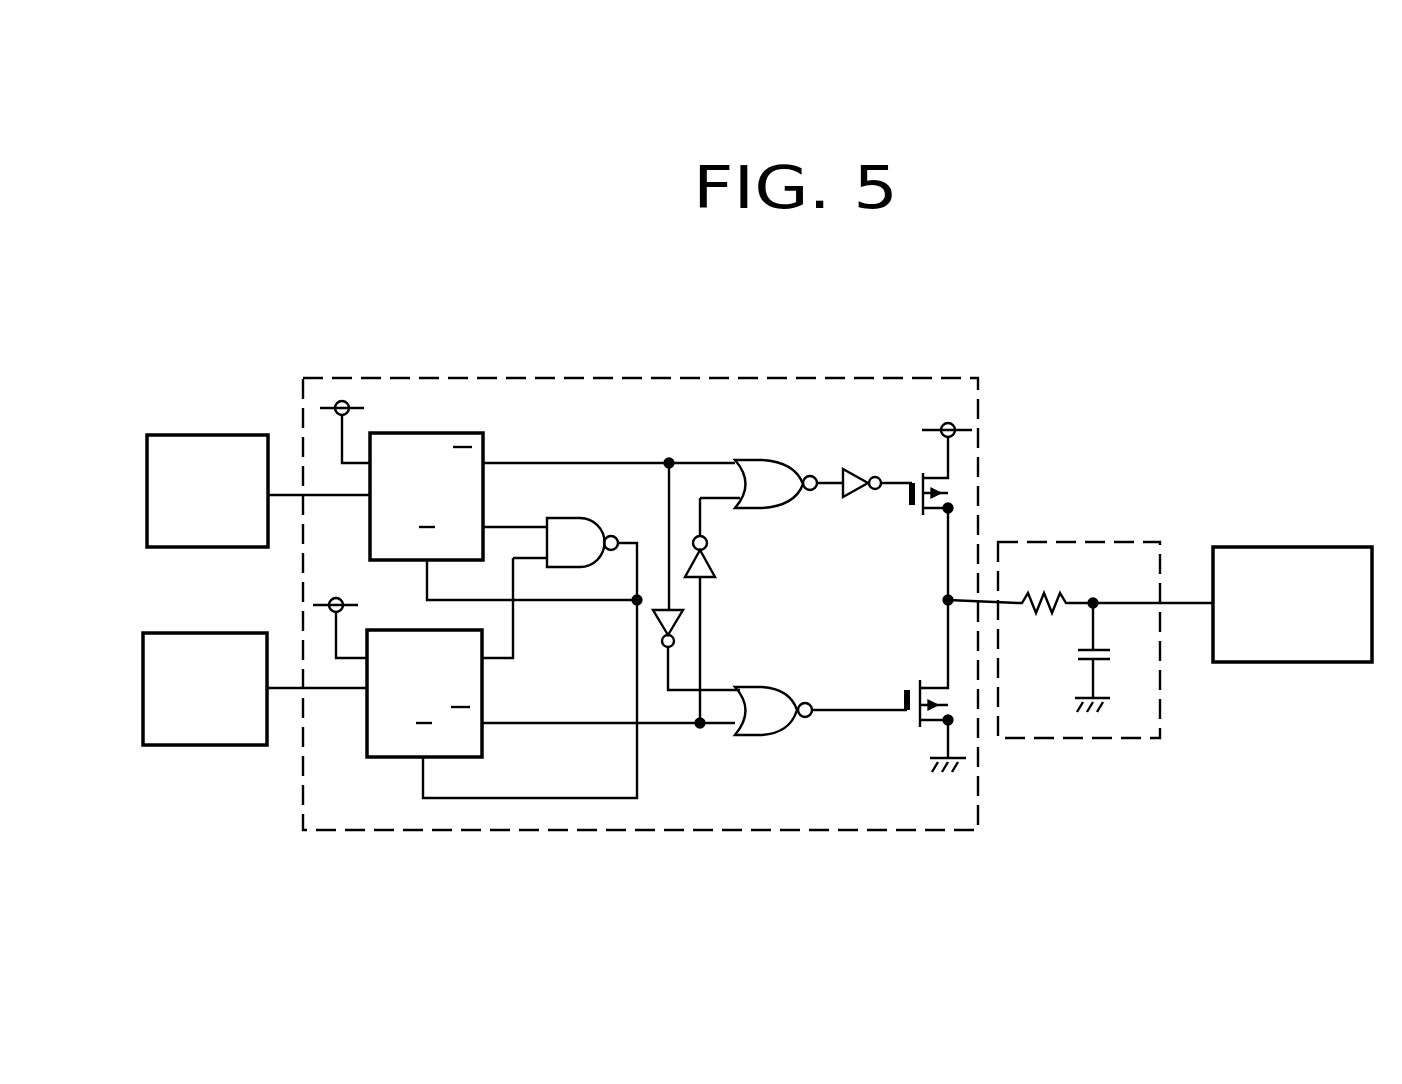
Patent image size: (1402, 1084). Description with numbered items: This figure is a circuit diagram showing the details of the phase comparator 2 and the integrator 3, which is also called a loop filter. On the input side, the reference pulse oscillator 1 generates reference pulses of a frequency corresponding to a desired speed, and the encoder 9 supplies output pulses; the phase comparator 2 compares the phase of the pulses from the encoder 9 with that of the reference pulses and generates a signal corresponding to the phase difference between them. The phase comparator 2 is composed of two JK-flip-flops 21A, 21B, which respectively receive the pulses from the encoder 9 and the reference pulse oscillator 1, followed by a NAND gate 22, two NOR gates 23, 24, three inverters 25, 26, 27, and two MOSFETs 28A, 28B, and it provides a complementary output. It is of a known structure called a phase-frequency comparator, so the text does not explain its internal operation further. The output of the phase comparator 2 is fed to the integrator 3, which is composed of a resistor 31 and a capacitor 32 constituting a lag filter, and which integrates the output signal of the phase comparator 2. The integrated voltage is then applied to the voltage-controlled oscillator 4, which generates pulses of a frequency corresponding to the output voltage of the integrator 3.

The reference pulse oscillator 1 is at (162, 492).
The encoder 9 is at (160, 685).
The phase comparator 2 is at (750, 378).
The JK-flip-flop 21A is at (457, 433).
The JK-flip-flop 21B is at (392, 757).
The NAND gate 22 is at (588, 530).
The NOR gate 23 is at (782, 460).
The NOR gate 24 is at (787, 698).
The inverter 25 is at (710, 562).
The inverter 26 is at (653, 627).
The inverter 27 is at (860, 468).
The MOSFET 28A is at (912, 522).
The MOSFET 28B is at (900, 727).
The integrator 3 is at (1138, 542).
The resistor 31 is at (1043, 580).
The capacitor 32 is at (1113, 662).
The voltage-controlled oscillator 4 is at (1272, 662).